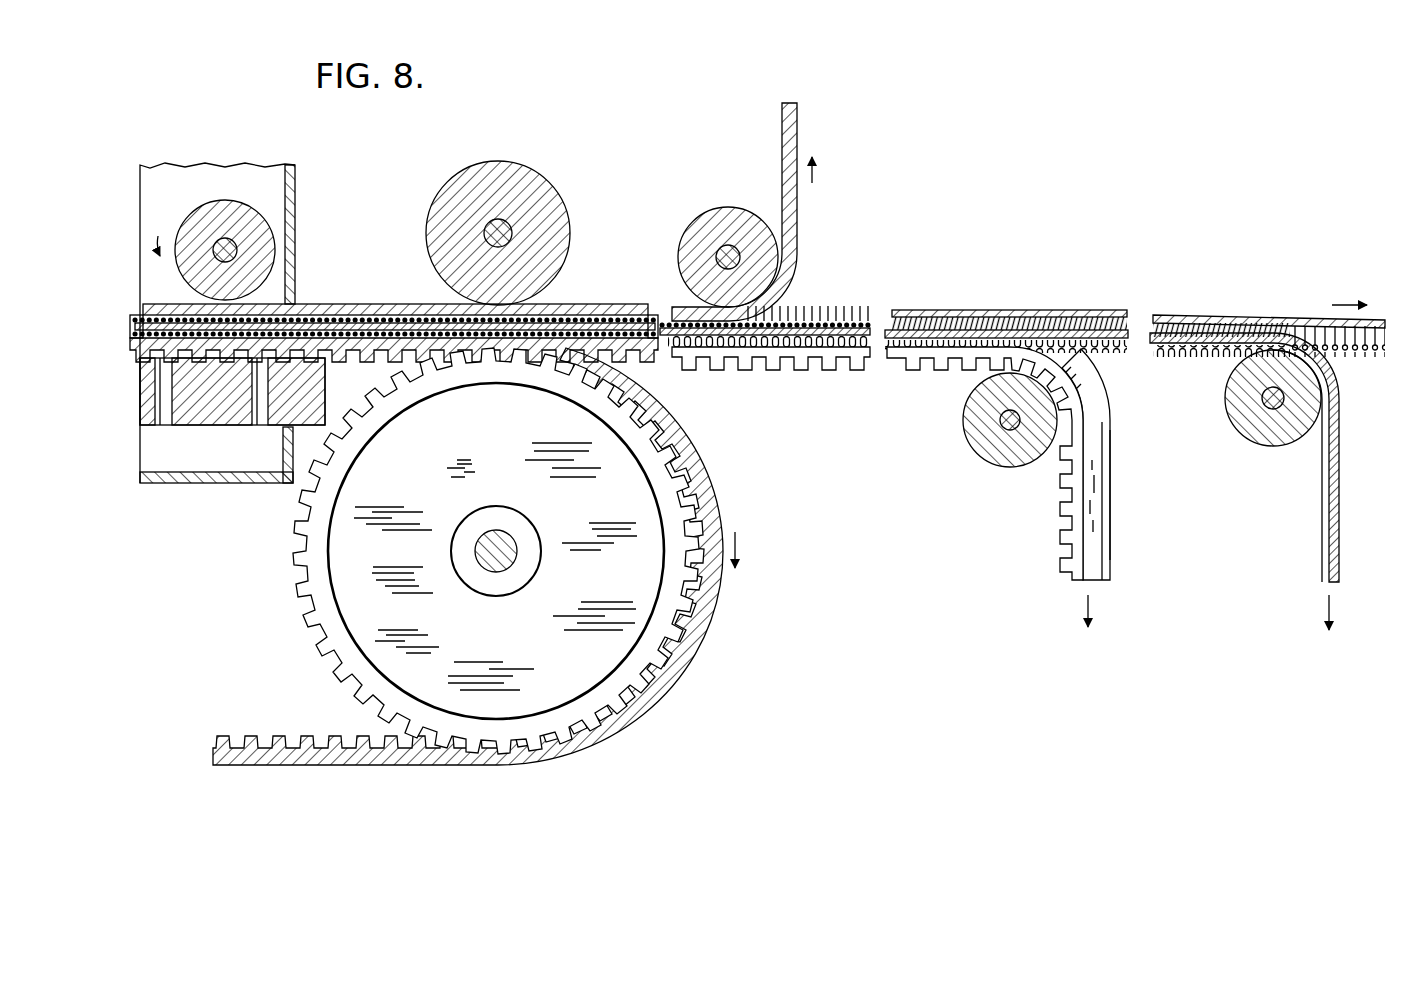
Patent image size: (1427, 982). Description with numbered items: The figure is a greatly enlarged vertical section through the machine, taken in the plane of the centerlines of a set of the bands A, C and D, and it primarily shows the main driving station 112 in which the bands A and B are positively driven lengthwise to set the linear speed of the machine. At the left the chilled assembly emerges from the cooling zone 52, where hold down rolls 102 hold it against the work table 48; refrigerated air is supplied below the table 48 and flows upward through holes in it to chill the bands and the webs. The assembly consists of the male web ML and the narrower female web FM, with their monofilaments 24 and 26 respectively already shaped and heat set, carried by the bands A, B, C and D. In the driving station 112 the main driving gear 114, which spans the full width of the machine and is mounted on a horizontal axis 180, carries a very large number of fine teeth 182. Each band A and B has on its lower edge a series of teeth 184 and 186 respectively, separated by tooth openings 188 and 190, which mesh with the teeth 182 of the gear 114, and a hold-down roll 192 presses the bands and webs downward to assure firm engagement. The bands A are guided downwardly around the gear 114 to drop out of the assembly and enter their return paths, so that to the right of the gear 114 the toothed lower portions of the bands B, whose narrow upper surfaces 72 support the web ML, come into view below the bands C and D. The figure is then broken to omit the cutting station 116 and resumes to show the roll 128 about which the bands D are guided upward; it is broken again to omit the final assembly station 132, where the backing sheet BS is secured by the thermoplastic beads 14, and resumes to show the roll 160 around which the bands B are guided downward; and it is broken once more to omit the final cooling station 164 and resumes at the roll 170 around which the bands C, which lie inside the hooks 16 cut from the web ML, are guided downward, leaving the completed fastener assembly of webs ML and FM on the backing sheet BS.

The hold down rolls 102 is at (201, 212).
The cooling zone 52 is at (305, 198).
The main driving station 112 is at (370, 262).
The monofilaments of the female web 26 is at (337, 309).
The bands D is at (400, 303).
The monofilaments of the male web 24 is at (480, 334).
The teeth of bands A 184 is at (348, 357).
The tooth openings of bands A 188 is at (400, 360).
The cutting station 116 is at (658, 292).
The work table 48 is at (213, 415).
The hold-down roll 192 is at (503, 170).
The guide roll 128 is at (727, 208).
The female web FM is at (573, 310).
The final assembly station 132 is at (880, 292).
The bands C is at (780, 336).
The male hooks 16 is at (863, 348).
The teeth of bands B 186 is at (682, 358).
The male web ML is at (641, 341).
The bands B is at (828, 364).
The upper surfaces of bands B 72 is at (1111, 462).
The tooth openings of bands B 190 is at (745, 360).
The guide roll 160 is at (982, 448).
The thermoplastic resinous beads 14 is at (847, 320).
The backing sheet BS is at (962, 310).
The final cooling station 164 is at (1136, 302).
The guide roll 170 is at (1253, 437).
The bands A is at (702, 622).
The gear teeth 182 is at (367, 394).
The main driving gear 114 is at (350, 585).
The horizontal axis 180 is at (497, 563).